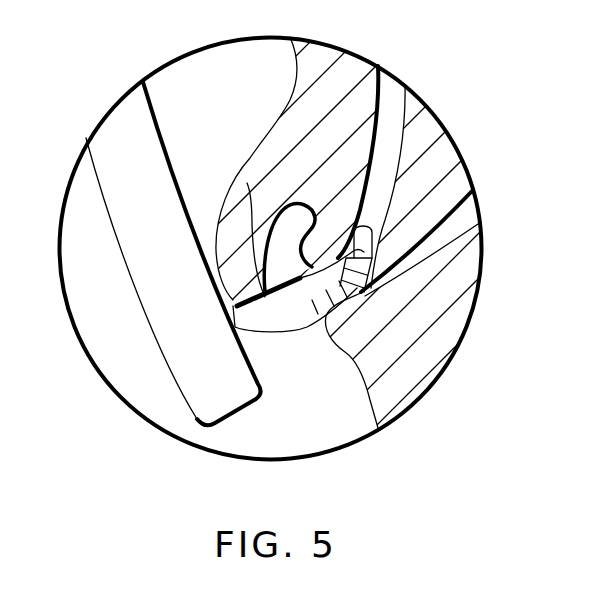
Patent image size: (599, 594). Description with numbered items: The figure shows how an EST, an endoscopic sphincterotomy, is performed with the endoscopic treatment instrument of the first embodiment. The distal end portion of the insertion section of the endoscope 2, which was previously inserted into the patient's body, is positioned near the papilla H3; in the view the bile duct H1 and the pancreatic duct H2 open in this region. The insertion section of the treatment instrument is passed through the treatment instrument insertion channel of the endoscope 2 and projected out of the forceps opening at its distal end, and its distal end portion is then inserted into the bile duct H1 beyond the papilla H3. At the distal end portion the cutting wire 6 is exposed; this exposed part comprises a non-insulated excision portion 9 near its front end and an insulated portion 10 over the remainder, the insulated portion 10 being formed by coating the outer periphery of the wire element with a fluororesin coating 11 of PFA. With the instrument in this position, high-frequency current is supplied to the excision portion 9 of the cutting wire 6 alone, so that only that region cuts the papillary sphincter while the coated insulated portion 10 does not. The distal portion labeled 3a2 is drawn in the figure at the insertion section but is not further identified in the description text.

The endoscope 2 is at (110, 118).
The insulated portion 10 is at (247, 183).
The papilla H3 is at (220, 258).
The cutting wire 6 is at (303, 278).
The bile duct H1 is at (388, 90).
The pancreatic duct H2 is at (470, 213).
The excision portion 9 is at (363, 292).
The coating 11 is at (288, 288).
The band portion 3a2 is at (270, 328).